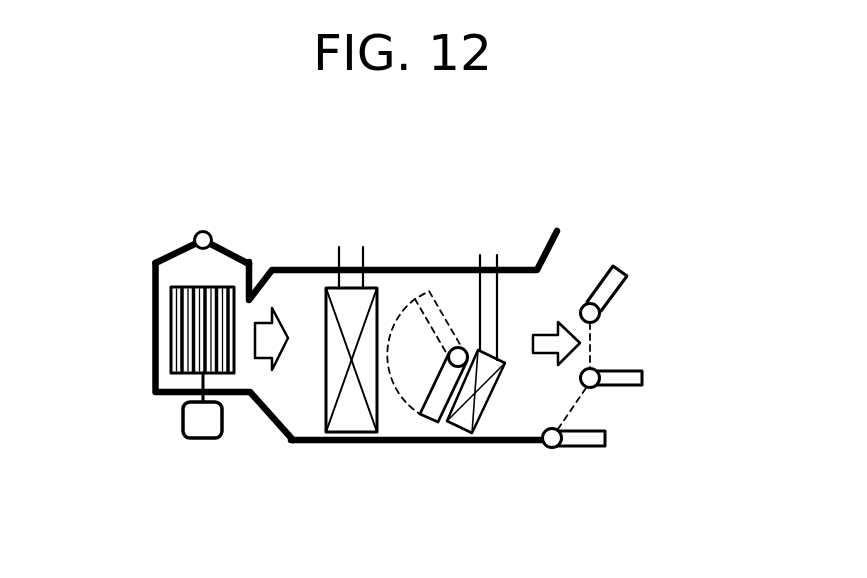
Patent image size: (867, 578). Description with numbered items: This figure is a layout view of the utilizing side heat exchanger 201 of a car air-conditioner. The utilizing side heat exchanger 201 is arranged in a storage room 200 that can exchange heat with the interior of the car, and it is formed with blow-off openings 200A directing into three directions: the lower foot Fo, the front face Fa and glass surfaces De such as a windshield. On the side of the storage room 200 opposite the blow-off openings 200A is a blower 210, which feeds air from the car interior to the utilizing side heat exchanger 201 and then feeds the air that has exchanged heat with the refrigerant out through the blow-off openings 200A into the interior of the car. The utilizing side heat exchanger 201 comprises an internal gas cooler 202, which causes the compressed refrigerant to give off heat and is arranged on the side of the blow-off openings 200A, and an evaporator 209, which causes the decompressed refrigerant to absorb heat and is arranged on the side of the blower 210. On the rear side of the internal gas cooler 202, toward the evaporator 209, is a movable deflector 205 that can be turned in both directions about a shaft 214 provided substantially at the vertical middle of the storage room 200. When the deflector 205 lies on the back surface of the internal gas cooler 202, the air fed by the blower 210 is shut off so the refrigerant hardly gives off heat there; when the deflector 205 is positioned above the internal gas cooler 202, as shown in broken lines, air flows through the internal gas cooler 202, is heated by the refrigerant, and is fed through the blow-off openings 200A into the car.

The storage room 200 is at (300, 393).
The blow-off openings 200A is at (518, 421).
The utilizing side heat exchanger 201 is at (325, 461).
The internal gas cooler 202 is at (456, 432).
The movable deflector 205 is at (411, 307).
The evaporator 209 is at (333, 297).
The blower 210 is at (171, 303).
The shaft 214 is at (447, 375).
The glass surfaces De is at (595, 283).
The front face Fa is at (612, 356).
The lower foot Fo is at (591, 423).